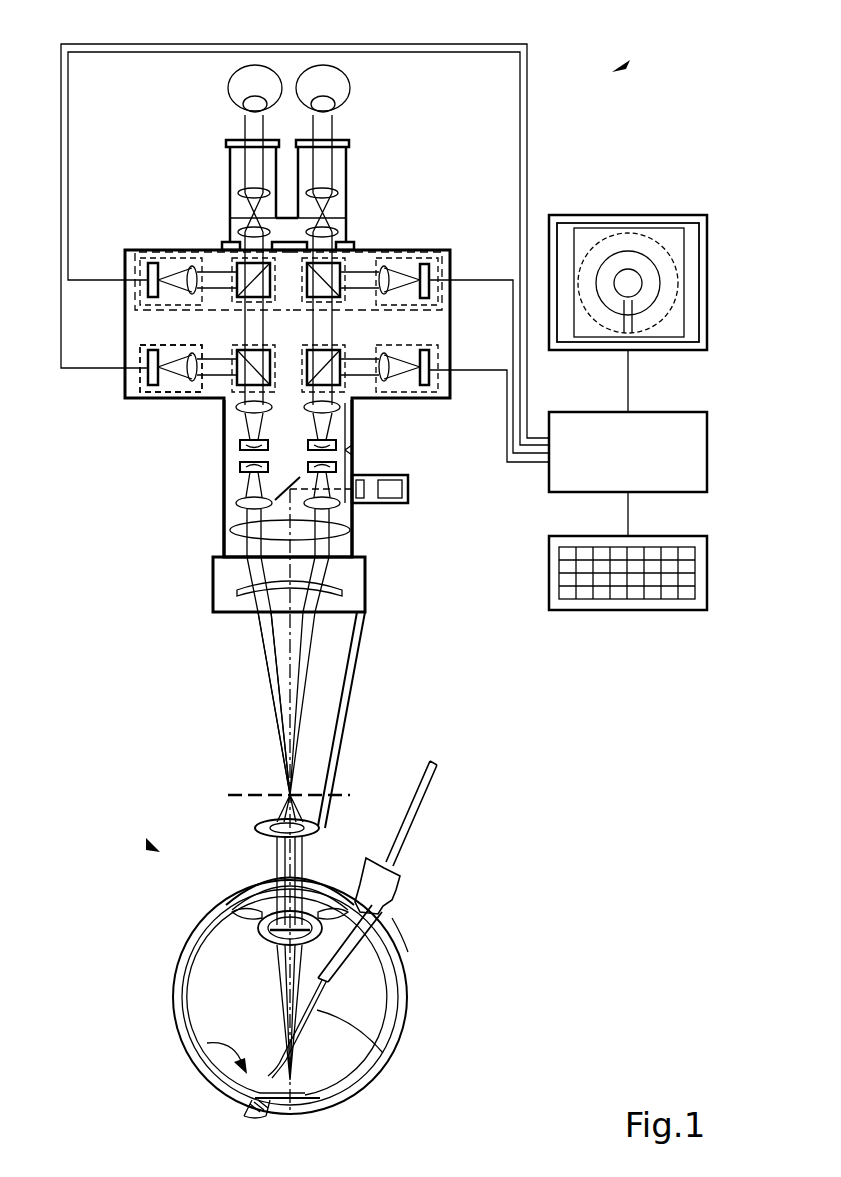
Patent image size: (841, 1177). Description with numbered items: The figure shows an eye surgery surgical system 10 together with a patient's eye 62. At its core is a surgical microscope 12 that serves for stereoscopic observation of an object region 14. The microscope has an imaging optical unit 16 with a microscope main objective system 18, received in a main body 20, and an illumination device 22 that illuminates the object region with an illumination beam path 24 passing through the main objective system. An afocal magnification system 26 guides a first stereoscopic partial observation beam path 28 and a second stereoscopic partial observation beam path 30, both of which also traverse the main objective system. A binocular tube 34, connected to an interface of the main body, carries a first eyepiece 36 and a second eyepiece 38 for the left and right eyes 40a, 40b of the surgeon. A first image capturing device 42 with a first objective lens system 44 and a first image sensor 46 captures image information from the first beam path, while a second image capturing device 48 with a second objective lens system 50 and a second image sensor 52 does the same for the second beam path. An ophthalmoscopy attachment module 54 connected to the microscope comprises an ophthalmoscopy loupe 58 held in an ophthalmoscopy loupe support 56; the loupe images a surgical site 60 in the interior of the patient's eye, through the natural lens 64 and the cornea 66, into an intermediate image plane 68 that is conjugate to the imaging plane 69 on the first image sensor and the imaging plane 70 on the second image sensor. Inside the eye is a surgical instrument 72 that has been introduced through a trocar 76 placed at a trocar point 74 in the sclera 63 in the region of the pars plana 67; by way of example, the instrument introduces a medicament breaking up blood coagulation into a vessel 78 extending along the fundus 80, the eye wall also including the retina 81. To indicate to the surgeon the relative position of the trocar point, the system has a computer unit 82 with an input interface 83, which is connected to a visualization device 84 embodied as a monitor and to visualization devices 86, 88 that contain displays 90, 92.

The eye surgery surgical system 10 is at (612, 72).
The surgical microscope 12 is at (125, 396).
The object region 14 is at (160, 852).
The imaging optical unit 16 is at (238, 480).
The microscope main objective system 18 is at (350, 527).
The main body 20 is at (354, 544).
The illumination device 22 is at (408, 489).
The illumination beam path 24 is at (288, 668).
The afocal magnification system 26 is at (352, 452).
The first stereoscopic partial observation beam path 28 is at (260, 640).
The second stereoscopic partial observation beam path 30 is at (348, 236).
The binocular tube 34 is at (228, 236).
The first eyepiece 36 is at (228, 168).
The second eyepiece 38 is at (348, 168).
The left eye 40a is at (228, 142).
The right eye 40b is at (348, 142).
The first image capturing device 42 is at (168, 394).
The first objective lens system 44 is at (196, 394).
The first image sensor 46 is at (150, 394).
The second image capturing device 48 is at (420, 396).
The second objective lens system 50 is at (392, 396).
The second image sensor 52 is at (430, 360).
The ophthalmoscopy attachment module 54 is at (366, 598).
The ophthalmoscopy loupe support 56 is at (345, 752).
The ophthalmoscopy loupe 58 is at (320, 834).
The surgical site 60 is at (188, 1032).
The patient's eye 62 is at (404, 998).
The sclera 63 is at (176, 980).
The natural lens 64 is at (242, 912).
The cornea 66 is at (270, 880).
The pars plana 67 is at (410, 948).
The intermediate image plane 68 is at (240, 795).
The imaging plane 69 is at (142, 354).
The imaging plane 70 is at (420, 348).
The surgical instrument 72 is at (385, 1053).
The trocar point 74 is at (390, 906).
The trocar 76 is at (402, 896).
The vessel 78 is at (246, 1100).
The fundus 80 is at (207, 1043).
The retina 81 is at (345, 1098).
The computer unit 82 is at (677, 410).
The input interface 83 is at (684, 612).
The visualization device 84 is at (570, 352).
The visualization device 86 is at (150, 250).
The visualization device 88 is at (440, 250).
The display 90 is at (148, 268).
The display 92 is at (430, 268).